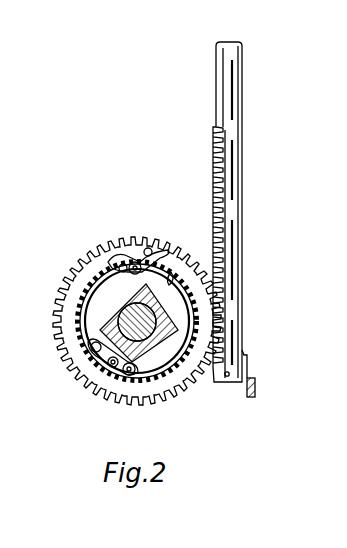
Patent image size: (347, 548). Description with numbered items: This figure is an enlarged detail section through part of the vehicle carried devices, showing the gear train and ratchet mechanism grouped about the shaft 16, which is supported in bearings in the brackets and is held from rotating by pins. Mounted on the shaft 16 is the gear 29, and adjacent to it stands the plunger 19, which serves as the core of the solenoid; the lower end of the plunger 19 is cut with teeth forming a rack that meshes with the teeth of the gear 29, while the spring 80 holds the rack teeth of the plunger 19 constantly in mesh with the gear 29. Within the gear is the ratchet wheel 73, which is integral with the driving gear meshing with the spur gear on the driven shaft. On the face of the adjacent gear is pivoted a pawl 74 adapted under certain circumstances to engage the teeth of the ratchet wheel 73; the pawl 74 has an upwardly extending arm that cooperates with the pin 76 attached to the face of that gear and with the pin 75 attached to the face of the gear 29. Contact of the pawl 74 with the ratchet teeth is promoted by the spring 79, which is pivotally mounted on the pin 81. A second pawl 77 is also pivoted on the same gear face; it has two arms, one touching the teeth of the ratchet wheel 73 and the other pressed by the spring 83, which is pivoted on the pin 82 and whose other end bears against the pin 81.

The shaft 16 is at (100, 328).
The plunger 19 is at (242, 178).
The gear 29 is at (170, 396).
The ratchet wheel 73 is at (115, 300).
The pawl 74 is at (152, 250).
The pin 75 is at (166, 246).
The pin 76 is at (112, 262).
The pawl 77 is at (94, 350).
The spring 79 is at (188, 354).
The spring 80 is at (250, 368).
The pin 81 is at (128, 376).
The pin 82 is at (112, 367).
The spring 83 is at (100, 357).